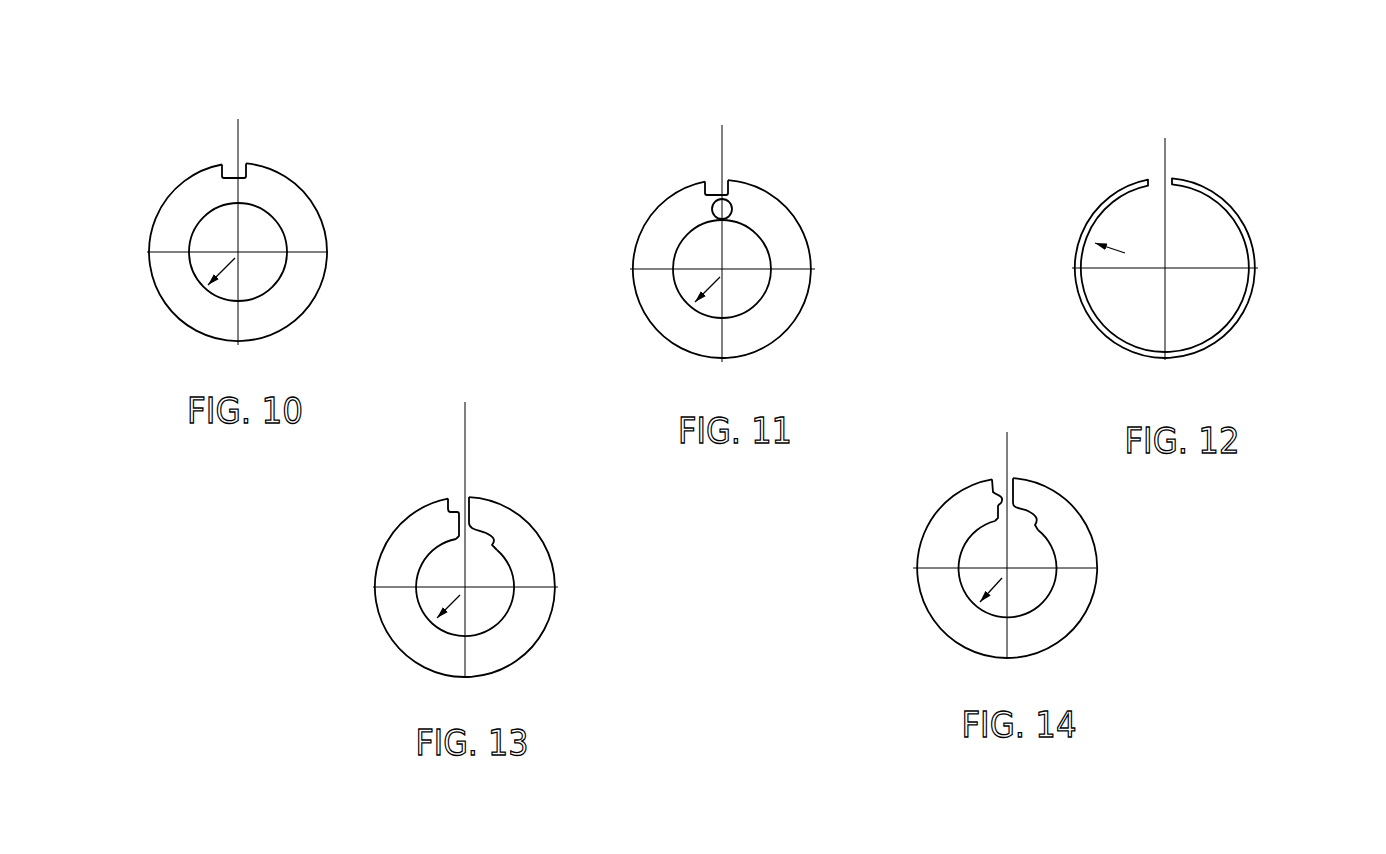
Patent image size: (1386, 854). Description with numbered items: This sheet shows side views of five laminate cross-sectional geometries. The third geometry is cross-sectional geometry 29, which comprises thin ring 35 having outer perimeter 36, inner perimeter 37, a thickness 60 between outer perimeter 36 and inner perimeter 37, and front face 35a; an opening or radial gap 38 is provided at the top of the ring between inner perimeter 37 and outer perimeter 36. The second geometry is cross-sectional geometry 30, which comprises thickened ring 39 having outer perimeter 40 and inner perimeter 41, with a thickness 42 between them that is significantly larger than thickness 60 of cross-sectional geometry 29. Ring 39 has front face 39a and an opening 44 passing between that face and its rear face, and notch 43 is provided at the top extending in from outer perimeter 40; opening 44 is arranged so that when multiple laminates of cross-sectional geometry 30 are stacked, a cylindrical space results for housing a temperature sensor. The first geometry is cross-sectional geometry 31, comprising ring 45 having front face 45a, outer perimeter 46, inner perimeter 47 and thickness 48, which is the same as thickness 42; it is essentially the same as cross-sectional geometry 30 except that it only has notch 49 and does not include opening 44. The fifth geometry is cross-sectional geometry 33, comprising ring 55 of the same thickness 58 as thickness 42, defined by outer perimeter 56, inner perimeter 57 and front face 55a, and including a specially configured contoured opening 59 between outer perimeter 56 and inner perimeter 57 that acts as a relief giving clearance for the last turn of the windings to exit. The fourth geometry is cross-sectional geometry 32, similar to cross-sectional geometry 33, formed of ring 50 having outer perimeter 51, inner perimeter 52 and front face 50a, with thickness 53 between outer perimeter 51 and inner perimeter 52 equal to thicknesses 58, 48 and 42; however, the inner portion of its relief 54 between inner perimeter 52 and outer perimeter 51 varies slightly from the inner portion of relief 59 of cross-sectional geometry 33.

In FIG. 12, the cross-sectional geometry 29 is at (1198, 137).
In FIG. 11, the cross-sectional geometry 30 is at (787, 130).
In FIG. 10, the cross-sectional geometry 31 is at (333, 137).
In FIG. 13, the cross-sectional geometry 32 is at (497, 473).
In FIG. 14, the cross-sectional geometry 33 is at (958, 443).
In FIG. 12, the thin ring 35 is at (1235, 212).
In FIG. 12, the front face 35a is at (1238, 312).
In FIG. 12, the outer perimeter 36 is at (1252, 238).
In FIG. 12, the inner perimeter 37 is at (1240, 251).
In FIG. 12, the radial gap 38 is at (1148, 173).
In FIG. 11, the thickened ring 39 is at (785, 228).
In FIG. 11, the front face 39a is at (732, 342).
In FIG. 11, the outer perimeter 40 is at (813, 252).
In FIG. 11, the inner perimeter 41 is at (765, 260).
In FIG. 11, the thickness 42 is at (655, 330).
In FIG. 11, the notch 43 is at (710, 180).
In FIG. 11, the opening 44 is at (713, 208).
In FIG. 10, the ring 45 is at (285, 203).
In FIG. 10, the front face 45a is at (252, 326).
In FIG. 10, the outer perimeter 46 is at (330, 233).
In FIG. 10, the inner perimeter 47 is at (282, 244).
In FIG. 10, the thickness 48 is at (170, 318).
In FIG. 10, the notch 49 is at (233, 162).
In FIG. 13, the ring 50 is at (535, 557).
In FIG. 13, the front face 50a is at (482, 656).
In FIG. 13, the outer perimeter 51 is at (557, 617).
In FIG. 13, the inner perimeter 52 is at (507, 600).
In FIG. 13, the thickness 53 is at (398, 647).
In FIG. 13, the relief 54 is at (460, 502).
In FIG. 14, the ring 55 is at (1077, 540).
In FIG. 14, the front face 55a is at (1015, 641).
In FIG. 14, the outer perimeter 56 is at (1090, 613).
In FIG. 14, the inner perimeter 57 is at (1047, 582).
In FIG. 14, the thickness 58 is at (953, 643).
In FIG. 14, the contoured opening 59 is at (1003, 477).
In FIG. 12, the thickness 60 is at (1077, 230).